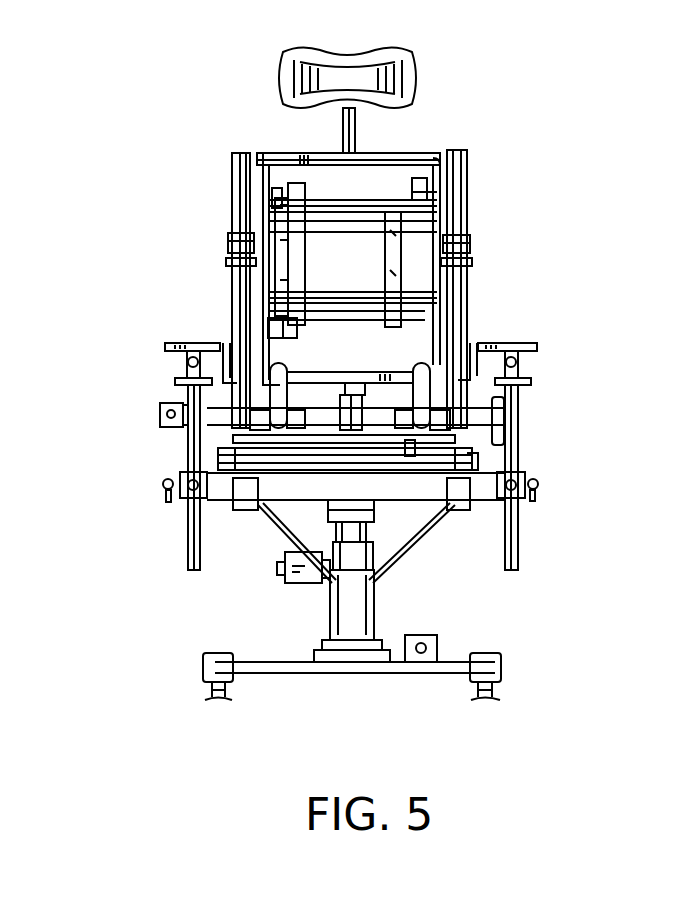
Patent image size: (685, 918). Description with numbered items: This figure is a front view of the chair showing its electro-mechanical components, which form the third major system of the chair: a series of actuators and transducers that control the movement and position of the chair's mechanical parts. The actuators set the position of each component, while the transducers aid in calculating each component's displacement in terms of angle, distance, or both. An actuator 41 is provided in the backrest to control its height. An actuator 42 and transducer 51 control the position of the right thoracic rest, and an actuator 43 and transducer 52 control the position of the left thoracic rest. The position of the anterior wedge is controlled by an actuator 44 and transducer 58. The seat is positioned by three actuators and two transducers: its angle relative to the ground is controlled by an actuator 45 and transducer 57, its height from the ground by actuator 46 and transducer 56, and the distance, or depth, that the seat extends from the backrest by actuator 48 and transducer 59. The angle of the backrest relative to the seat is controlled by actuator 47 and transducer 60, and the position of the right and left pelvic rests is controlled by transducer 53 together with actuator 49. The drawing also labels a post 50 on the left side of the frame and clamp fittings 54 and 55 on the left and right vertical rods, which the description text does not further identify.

The actuator 41 is at (277, 207).
The actuator 42 is at (423, 187).
The actuator 43 is at (278, 332).
The actuator 44 is at (268, 515).
The actuator 45 is at (287, 583).
The actuator 46 is at (347, 645).
The actuator 47 is at (572, 456).
The actuator 48 is at (484, 530).
The actuator 49 is at (370, 385).
The left post 50 is at (236, 195).
The transducer 51 is at (228, 245).
The transducer 52 is at (463, 247).
The transducer 53 is at (167, 402).
The clamp 54 is at (175, 490).
The clamp 55 is at (530, 493).
The transducer 56 is at (428, 662).
The transducer 57 is at (245, 593).
The transducer 58 is at (272, 526).
The transducer 59 is at (408, 457).
The transducer 60 is at (523, 410).